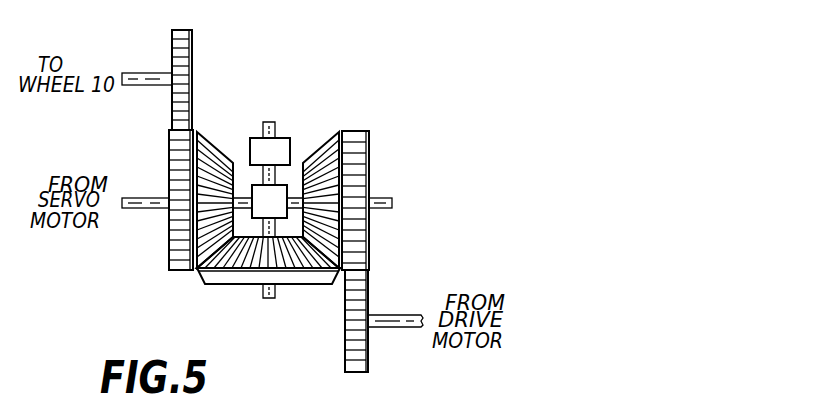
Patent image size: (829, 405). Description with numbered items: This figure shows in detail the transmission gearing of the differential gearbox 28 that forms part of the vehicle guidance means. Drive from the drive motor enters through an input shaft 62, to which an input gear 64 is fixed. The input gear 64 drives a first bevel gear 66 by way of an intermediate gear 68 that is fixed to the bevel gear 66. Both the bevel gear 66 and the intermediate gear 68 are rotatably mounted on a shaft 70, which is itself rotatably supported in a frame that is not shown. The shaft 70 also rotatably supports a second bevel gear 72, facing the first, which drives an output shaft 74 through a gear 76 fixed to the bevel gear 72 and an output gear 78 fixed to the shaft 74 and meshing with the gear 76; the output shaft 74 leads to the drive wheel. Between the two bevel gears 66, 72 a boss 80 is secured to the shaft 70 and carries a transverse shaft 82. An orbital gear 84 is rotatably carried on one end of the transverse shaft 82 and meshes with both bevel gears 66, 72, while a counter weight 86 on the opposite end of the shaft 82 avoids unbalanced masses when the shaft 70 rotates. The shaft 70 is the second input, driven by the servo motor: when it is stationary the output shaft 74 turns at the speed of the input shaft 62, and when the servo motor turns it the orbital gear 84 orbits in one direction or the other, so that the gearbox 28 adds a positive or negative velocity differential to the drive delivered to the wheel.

The differential gearbox 28 is at (283, 95).
The input shaft 62 is at (411, 315).
The input gear 64 is at (347, 353).
The first bevel gear 66 is at (320, 146).
The intermediate gear 68 is at (367, 137).
The shaft 70 is at (144, 209).
The second bevel gear 72 is at (213, 146).
The output shaft 74 is at (139, 73).
The gear 76 is at (180, 272).
The output gear 78 is at (193, 34).
The boss 80 is at (279, 186).
The transverse shaft 82 is at (262, 292).
The orbital gear 84 is at (288, 270).
The counter weight 86 is at (278, 138).